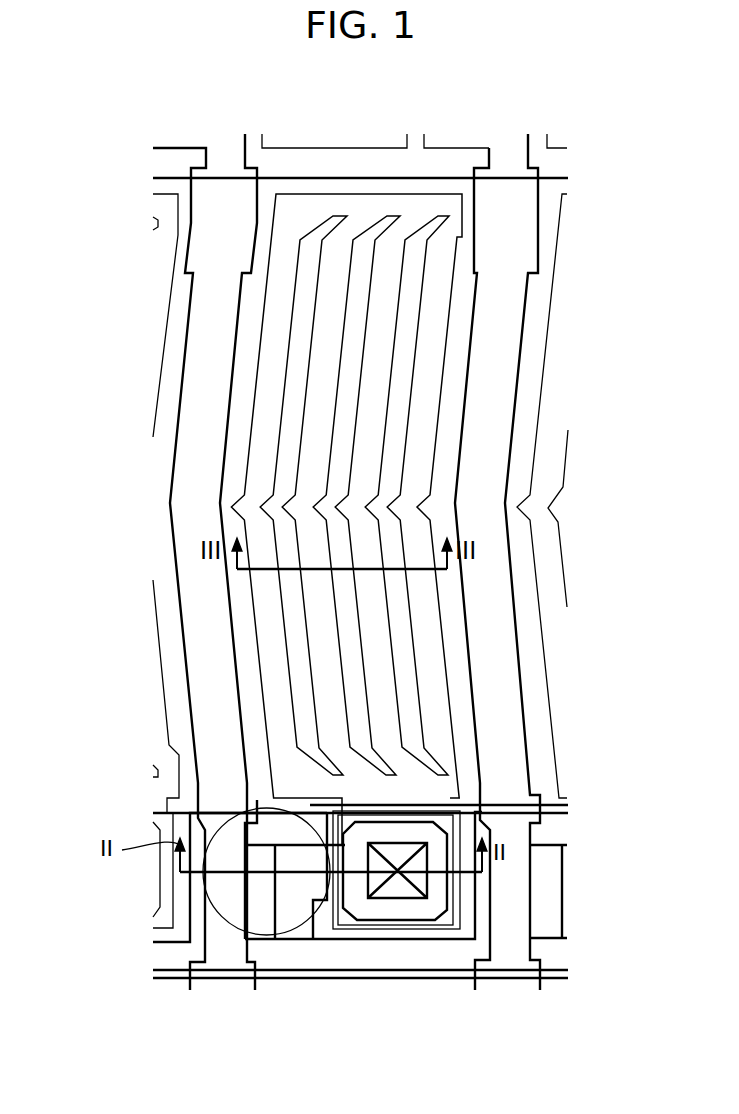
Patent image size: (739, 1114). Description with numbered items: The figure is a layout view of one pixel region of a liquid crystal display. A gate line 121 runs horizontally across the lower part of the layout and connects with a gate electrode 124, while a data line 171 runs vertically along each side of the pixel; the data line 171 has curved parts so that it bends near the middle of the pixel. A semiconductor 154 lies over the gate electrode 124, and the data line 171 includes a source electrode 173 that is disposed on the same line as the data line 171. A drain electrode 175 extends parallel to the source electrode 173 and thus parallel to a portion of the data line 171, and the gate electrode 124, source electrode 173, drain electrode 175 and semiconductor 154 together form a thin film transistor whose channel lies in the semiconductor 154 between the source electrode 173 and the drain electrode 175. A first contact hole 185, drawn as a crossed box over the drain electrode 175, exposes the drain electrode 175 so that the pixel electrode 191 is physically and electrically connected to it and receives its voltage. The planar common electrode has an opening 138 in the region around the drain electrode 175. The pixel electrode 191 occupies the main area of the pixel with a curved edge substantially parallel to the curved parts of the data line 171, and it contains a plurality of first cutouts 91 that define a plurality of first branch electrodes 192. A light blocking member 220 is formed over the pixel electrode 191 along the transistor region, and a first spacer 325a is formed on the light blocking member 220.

The first cutouts 91 is at (340, 365).
The gate line 121 is at (442, 942).
The gate electrode 124 is at (190, 890).
The opening 138 is at (460, 913).
The semiconductor 154 is at (268, 940).
The data line 171 is at (170, 522).
The source electrode 173 is at (248, 907).
The drain electrode 175 is at (320, 932).
The first contact hole 185 is at (387, 898).
The pixel electrode 191 is at (458, 776).
The first branch electrodes 192 is at (452, 495).
The light blocking member 220 is at (165, 980).
The first spacer 325a is at (227, 893).